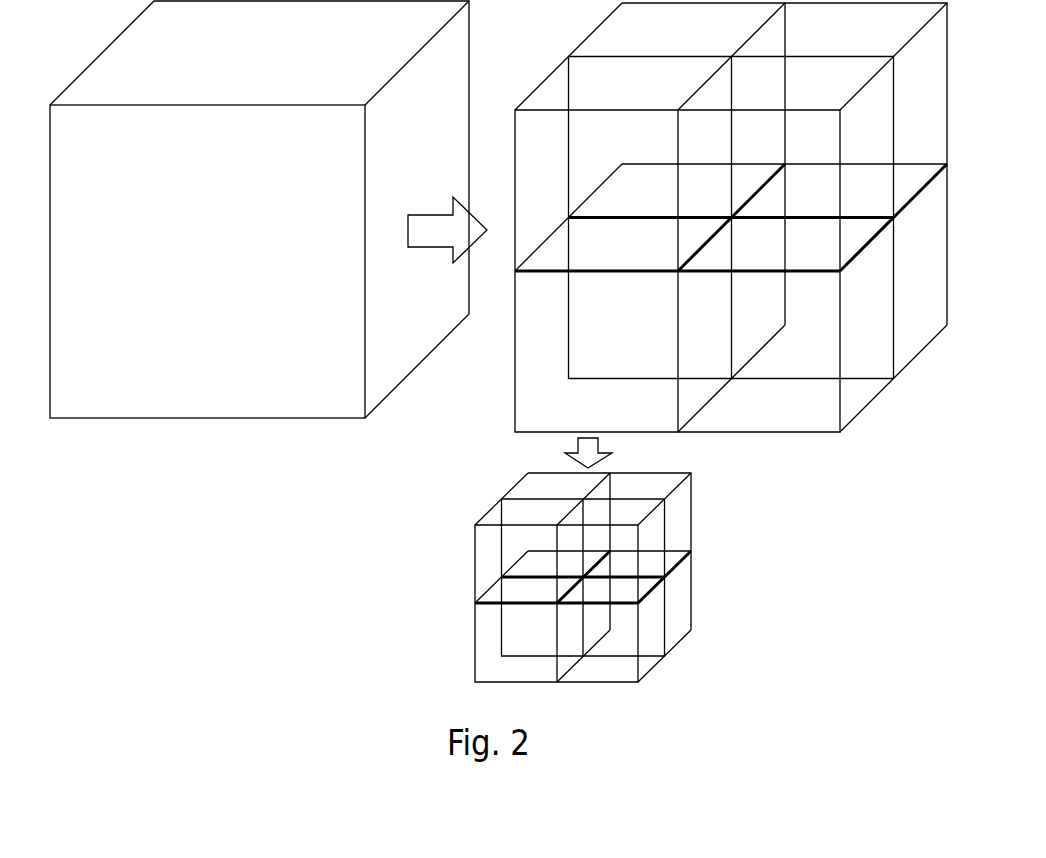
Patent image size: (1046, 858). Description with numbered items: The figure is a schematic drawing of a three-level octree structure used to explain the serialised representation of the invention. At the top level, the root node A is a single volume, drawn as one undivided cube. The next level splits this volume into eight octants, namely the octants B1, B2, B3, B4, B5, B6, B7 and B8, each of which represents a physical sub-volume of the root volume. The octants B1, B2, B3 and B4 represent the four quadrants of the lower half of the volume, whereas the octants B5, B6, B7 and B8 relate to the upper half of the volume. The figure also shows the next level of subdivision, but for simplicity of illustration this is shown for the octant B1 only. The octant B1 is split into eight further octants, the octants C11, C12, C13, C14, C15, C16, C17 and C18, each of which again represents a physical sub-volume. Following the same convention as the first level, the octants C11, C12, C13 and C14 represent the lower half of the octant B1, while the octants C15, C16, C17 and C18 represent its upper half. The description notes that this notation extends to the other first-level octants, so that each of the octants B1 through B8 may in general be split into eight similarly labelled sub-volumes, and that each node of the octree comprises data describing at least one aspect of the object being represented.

The root node A is at (77, 408).
The octant B1 is at (553, 420).
The octant B2 is at (826, 420).
The octant B3 is at (612, 368).
The octant B4 is at (883, 368).
The octant B5 is at (548, 233).
The octant B6 is at (826, 248).
The octant B7 is at (600, 181).
The octant B8 is at (881, 205).
The octant C11 is at (520, 676).
The octant C12 is at (637, 676).
The octant C13 is at (543, 645).
The octant C14 is at (666, 653).
The octant C15 is at (520, 601).
The octant C16 is at (633, 601).
The octant C17 is at (547, 575).
The octant C18 is at (662, 575).